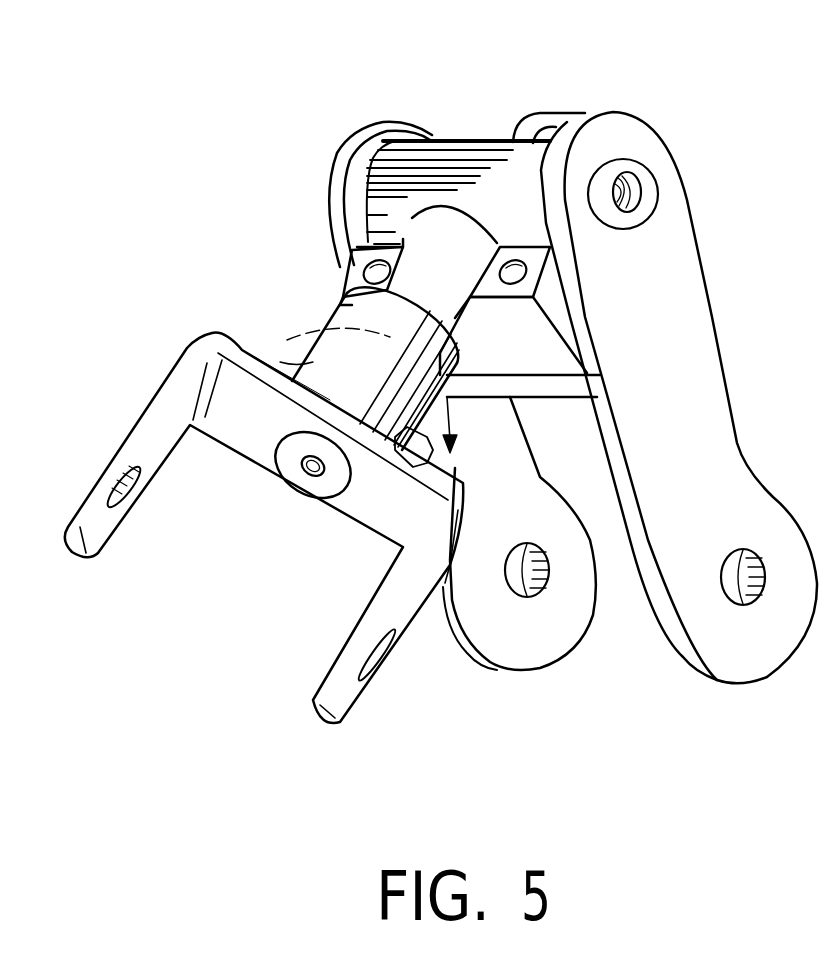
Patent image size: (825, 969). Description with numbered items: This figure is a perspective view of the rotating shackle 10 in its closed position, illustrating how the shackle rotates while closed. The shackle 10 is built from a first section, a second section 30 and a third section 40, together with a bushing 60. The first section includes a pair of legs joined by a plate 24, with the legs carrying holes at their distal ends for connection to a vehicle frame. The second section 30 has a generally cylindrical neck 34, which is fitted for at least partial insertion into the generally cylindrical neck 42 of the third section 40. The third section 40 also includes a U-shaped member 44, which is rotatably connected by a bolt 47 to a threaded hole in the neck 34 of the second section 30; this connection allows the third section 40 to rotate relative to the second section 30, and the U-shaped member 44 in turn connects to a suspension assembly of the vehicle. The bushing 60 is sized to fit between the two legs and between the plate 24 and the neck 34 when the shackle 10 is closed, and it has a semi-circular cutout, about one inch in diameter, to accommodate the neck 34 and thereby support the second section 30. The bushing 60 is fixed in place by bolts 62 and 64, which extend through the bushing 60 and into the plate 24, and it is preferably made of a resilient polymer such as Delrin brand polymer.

The rotating shackle 10 is at (133, 77).
The plate 24 is at (543, 383).
The second section 30 is at (510, 185).
The neck 34 is at (443, 235).
The third section 40 is at (283, 427).
The neck 42 is at (310, 357).
The U-shaped member 44 is at (272, 551).
The bolt 47 is at (327, 492).
The bushing 60 is at (530, 355).
The bolt 62 is at (345, 270).
The bolt 64 is at (520, 263).